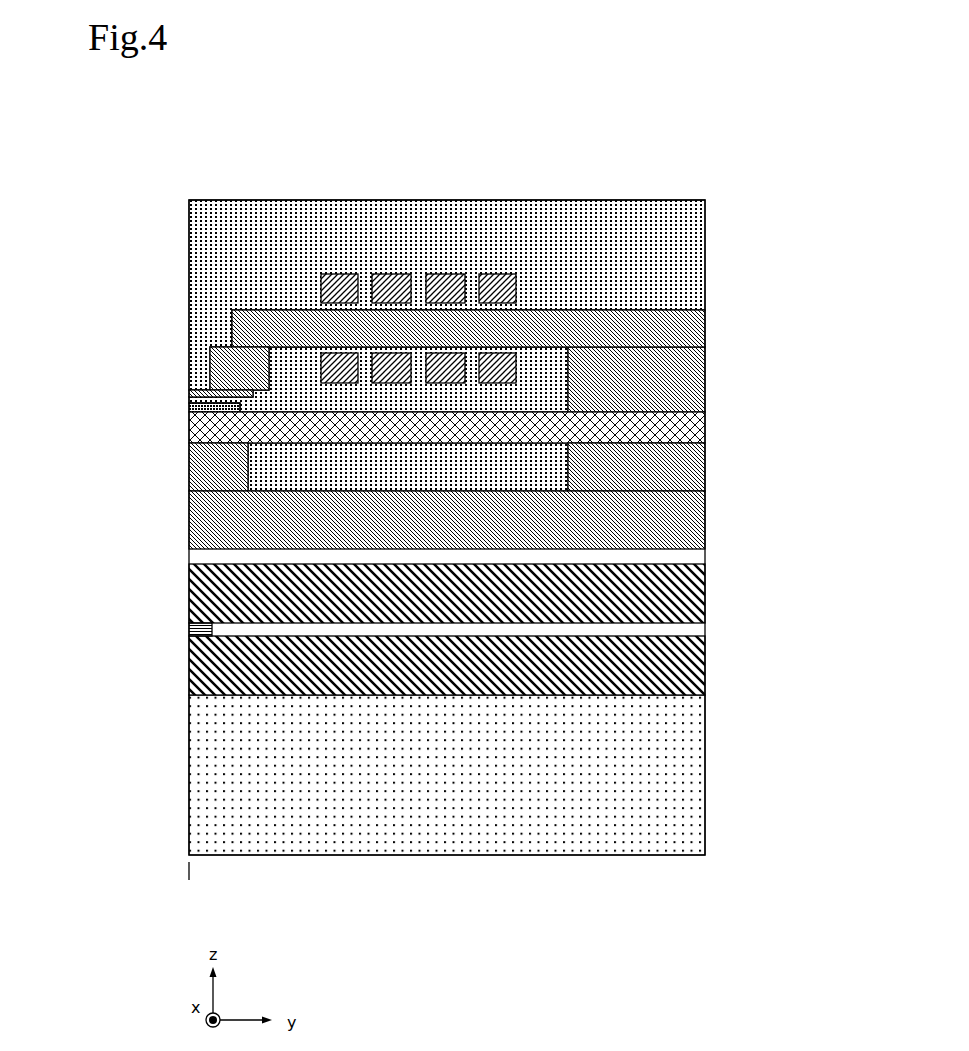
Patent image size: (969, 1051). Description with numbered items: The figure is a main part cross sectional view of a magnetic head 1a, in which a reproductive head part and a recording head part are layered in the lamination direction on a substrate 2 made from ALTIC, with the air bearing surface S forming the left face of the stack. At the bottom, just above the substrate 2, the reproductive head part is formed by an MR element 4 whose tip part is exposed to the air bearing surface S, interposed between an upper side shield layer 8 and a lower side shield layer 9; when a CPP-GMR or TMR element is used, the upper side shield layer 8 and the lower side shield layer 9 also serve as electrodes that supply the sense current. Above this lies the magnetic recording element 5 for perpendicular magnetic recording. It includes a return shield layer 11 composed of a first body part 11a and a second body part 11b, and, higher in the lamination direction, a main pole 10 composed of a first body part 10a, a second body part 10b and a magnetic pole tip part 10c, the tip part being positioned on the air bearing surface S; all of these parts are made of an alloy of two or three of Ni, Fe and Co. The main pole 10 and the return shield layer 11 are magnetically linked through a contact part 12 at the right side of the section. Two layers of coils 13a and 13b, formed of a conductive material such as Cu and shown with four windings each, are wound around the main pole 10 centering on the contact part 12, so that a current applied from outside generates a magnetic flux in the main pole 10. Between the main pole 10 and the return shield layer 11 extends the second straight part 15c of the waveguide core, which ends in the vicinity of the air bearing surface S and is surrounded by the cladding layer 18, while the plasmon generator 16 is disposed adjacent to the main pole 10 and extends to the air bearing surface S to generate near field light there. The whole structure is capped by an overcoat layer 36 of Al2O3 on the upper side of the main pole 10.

The magnetic head 1a is at (477, 172).
The substrate 2 is at (709, 783).
The MR element 4 is at (190, 632).
The magnetic recording element 5 is at (103, 431).
The upper side shield layer 8 is at (707, 598).
The lower side shield layer 9 is at (707, 673).
The main pole 10 is at (77, 262).
The first body part 10a is at (232, 327).
The second body part 10b is at (210, 360).
The magnetic pole tip part 10c is at (188, 392).
The return shield layer 11 is at (79, 458).
The first body part 11a is at (188, 507).
The second body part 11b is at (188, 463).
The contact part 12 is at (650, 380).
The coil 13a is at (336, 275).
The coil 13b is at (330, 353).
The second straight part 15c is at (188, 430).
The plasmon generator 16 is at (188, 402).
The cladding layer 18 is at (403, 403).
The overcoat layer 36 is at (403, 215).
The air bearing surface S is at (193, 891).